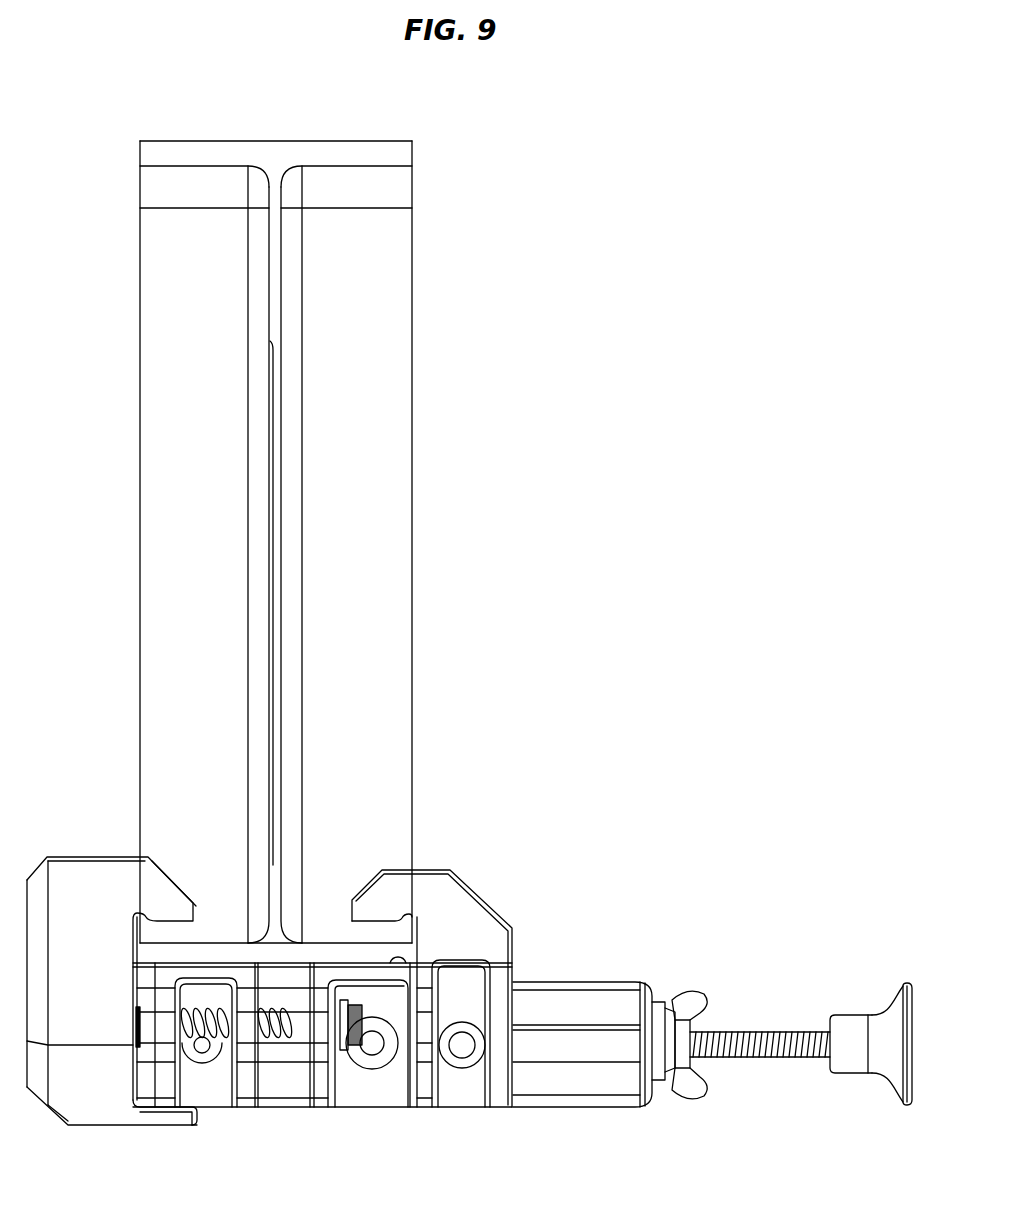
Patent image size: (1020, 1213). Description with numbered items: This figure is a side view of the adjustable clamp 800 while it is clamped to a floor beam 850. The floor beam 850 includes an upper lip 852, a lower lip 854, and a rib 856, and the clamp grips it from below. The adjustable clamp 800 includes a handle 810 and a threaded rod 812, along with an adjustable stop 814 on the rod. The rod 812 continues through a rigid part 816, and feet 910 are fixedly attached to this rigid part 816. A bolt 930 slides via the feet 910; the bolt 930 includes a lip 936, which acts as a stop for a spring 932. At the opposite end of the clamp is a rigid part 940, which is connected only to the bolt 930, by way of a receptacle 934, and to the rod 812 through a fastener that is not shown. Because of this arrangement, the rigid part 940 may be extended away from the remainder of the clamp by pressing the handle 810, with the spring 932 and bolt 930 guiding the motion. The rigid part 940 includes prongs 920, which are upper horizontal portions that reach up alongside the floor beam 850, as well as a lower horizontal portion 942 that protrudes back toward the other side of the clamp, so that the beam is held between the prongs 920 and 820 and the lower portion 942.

The adjustable clamp 800 is at (759, 902).
The handle 810 is at (897, 985).
The rod 812 is at (780, 1035).
The adjustable stop 814 is at (686, 996).
The rigid part 816 is at (596, 984).
The prongs 820 is at (441, 870).
The floor beam 850 is at (492, 410).
The upper lip 852 is at (395, 150).
The lower lip 854 is at (403, 955).
The rib 856 is at (412, 618).
The feet 910 is at (240, 975).
The prongs 920 is at (90, 855).
The bolt 930 is at (295, 1043).
The spring 932 is at (202, 1040).
The receptacle 934 is at (138, 1047).
The lip 936 is at (340, 1047).
The rigid part 940 is at (36, 1078).
The lower horizontal portion 942 is at (172, 1128).